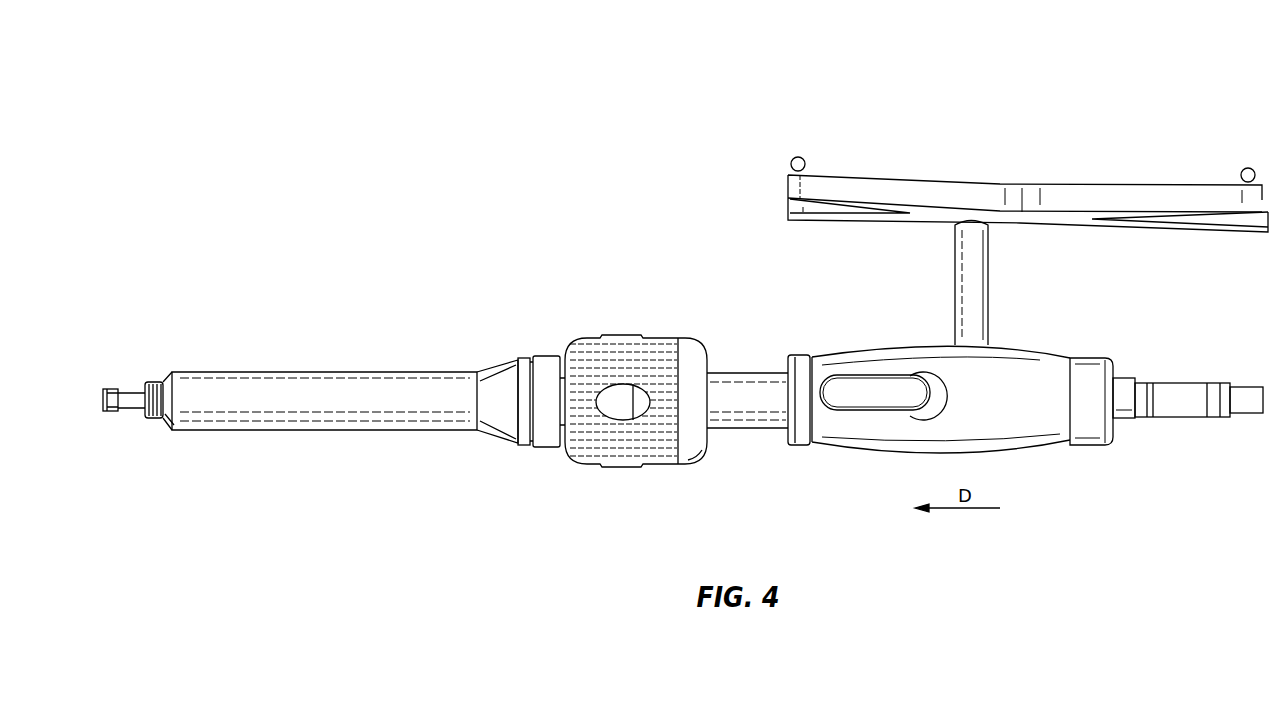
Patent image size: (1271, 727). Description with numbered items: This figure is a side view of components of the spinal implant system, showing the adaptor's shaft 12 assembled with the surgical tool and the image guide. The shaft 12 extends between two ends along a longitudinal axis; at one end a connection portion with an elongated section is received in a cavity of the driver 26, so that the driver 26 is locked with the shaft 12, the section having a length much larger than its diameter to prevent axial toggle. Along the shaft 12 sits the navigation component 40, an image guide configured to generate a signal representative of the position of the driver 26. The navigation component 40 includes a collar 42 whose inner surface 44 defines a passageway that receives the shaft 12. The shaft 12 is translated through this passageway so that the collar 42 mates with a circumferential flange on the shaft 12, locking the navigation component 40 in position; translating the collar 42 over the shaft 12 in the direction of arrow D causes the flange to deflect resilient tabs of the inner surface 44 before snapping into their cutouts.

The driver 26 is at (296, 345).
The navigation component 40 is at (1022, 138).
The collar 42 is at (1118, 357).
The inner surface 44 is at (1118, 368).
The shaft 12 is at (1170, 400).